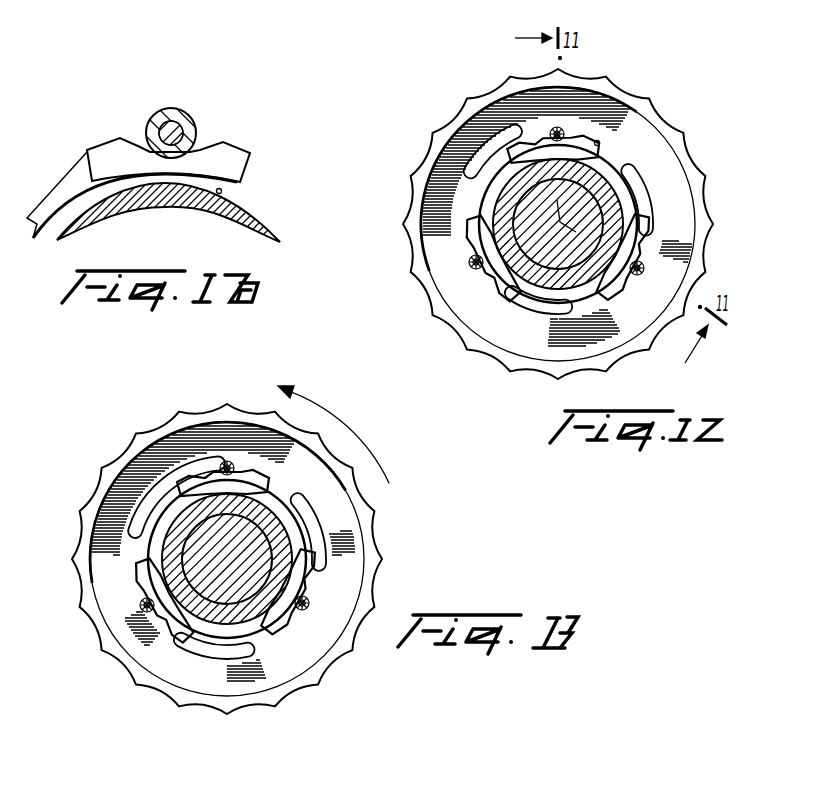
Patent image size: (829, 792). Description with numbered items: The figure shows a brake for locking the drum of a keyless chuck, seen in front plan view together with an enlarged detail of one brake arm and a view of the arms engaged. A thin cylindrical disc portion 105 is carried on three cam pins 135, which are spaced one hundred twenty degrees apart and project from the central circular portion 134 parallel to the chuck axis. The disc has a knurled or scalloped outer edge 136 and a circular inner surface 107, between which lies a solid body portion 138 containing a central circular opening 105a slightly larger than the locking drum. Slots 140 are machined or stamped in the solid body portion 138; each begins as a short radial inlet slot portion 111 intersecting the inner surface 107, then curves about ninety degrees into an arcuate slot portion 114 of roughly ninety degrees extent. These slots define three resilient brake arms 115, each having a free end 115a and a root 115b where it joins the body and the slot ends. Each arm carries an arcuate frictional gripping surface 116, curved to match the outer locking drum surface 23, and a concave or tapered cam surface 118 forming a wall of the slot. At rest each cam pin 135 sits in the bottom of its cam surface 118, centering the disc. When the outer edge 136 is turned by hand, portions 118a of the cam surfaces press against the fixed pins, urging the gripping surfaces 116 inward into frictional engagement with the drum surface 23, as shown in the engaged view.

In FIG. 12, the outer locking drum surface 23 is at (535, 283).
In FIG. 12A, the outer locking drum surface 23 is at (258, 216).
In FIG. 13, the outer locking drum surface 23 is at (157, 557).
In FIG. 12, the cylindrical disc portion 105 is at (628, 127).
In FIG. 12, the central circular opening 105a is at (628, 203).
In FIG. 12, the circular inner surface 107 is at (495, 192).
In FIG. 12, the inlet slot portion 111 is at (600, 143).
In FIG. 12, the arcuate slot portion 114 is at (502, 137).
In FIG. 13, the arcuate slot portion 114 is at (213, 660).
In FIG. 12, the brake arm 115 is at (640, 246).
In FIG. 12A, the brake arm 115 is at (238, 157).
In FIG. 13, the brake arm 115 is at (247, 480).
In FIG. 12, the free end 115a is at (613, 298).
In FIG. 12, the root 115b is at (628, 187).
In FIG. 12, the frictional gripping surface 116 is at (640, 240).
In FIG. 12A, the frictional gripping surface 116 is at (222, 192).
In FIG. 13, the frictional gripping surface 116 is at (300, 578).
In FIG. 12, the cam surface 118 is at (645, 266).
In FIG. 12A, the cam surface 118 is at (138, 134).
In FIG. 12, the cam surface portion 118a is at (637, 278).
In FIG. 12A, the cam surface portion 118a is at (203, 148).
In FIG. 12A, the central circular portion 134 is at (290, 0).
In FIG. 12, the cam pin 135 is at (562, 125).
In FIG. 12A, the cam pin 135 is at (172, 110).
In FIG. 13, the cam pin 135 is at (222, 466).
In FIG. 12, the outer edge 136 is at (638, 97).
In FIG. 13, the outer edge 136 is at (143, 683).
In FIG. 12, the solid body portion 138 is at (562, 101).
In FIG. 12, the slot 140 is at (470, 283).